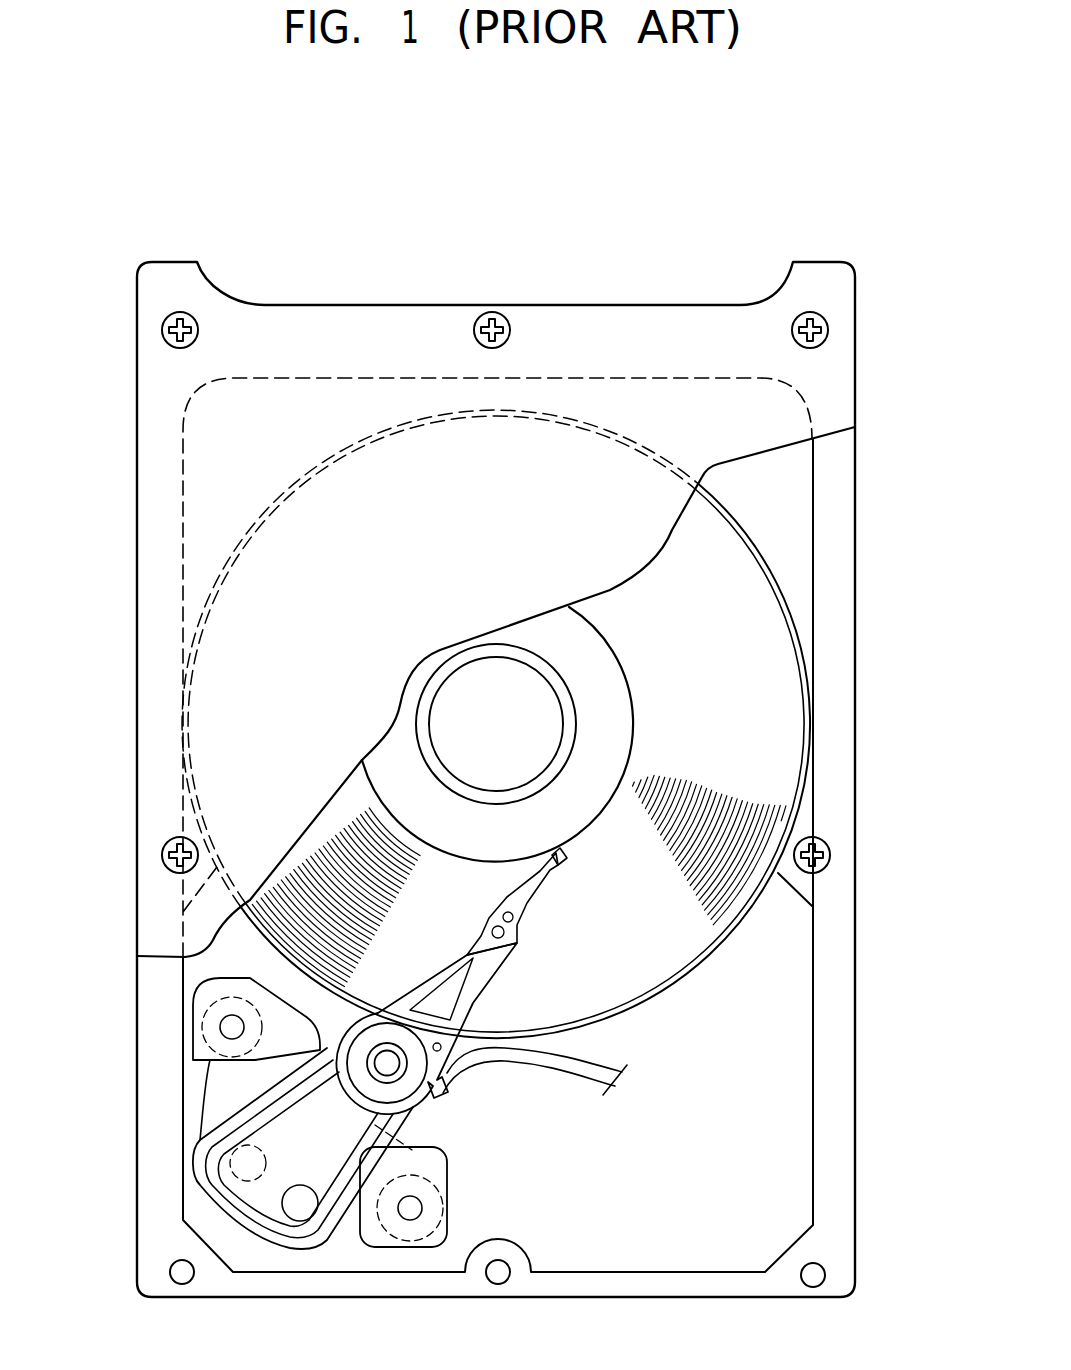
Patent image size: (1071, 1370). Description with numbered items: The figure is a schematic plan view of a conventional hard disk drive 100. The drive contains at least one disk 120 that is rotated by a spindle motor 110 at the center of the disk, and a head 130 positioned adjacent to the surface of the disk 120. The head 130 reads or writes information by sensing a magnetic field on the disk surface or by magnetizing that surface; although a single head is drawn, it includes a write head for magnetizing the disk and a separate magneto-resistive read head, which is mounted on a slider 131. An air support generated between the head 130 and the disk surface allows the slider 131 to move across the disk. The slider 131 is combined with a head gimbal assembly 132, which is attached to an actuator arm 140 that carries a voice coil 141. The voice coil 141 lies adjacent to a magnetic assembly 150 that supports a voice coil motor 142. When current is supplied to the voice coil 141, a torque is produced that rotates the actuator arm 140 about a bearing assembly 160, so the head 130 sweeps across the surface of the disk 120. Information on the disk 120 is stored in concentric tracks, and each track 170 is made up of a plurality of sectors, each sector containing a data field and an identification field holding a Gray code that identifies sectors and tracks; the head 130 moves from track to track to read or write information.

The hard disk drive 100 is at (660, 234).
The spindle motor 110 is at (463, 693).
The disk 120 is at (750, 653).
The head 130 is at (567, 863).
The slider 131 is at (535, 900).
The head gimbal assembly 132 is at (486, 1003).
The actuator arm 140 is at (290, 1085).
The voice coil 141 is at (225, 1168).
The voice coil motor 142 is at (345, 1232).
The magnetic assembly 150 is at (227, 1097).
The bearing assembly 160 is at (405, 1068).
The track 170 is at (340, 840).